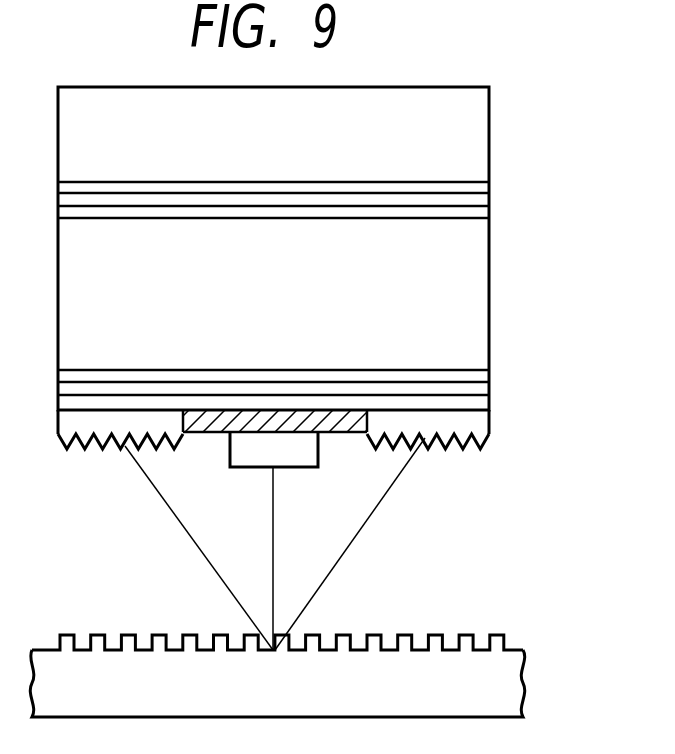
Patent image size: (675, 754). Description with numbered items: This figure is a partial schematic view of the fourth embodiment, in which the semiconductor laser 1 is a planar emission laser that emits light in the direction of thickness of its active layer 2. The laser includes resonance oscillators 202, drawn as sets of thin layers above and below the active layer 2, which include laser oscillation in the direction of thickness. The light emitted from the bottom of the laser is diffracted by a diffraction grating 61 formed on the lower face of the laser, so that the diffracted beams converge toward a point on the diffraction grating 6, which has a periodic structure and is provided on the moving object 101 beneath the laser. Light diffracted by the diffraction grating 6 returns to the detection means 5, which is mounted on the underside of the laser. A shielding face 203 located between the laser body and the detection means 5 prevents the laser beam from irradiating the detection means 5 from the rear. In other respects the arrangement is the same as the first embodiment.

The semiconductor laser 1 is at (480, 120).
The active layer 2 is at (478, 302).
The resonance oscillators 202 is at (497, 175).
The shielding face 203 is at (352, 433).
The diffraction grating 61 is at (475, 427).
The detection means 5 is at (245, 460).
The diffraction grating 6 is at (500, 643).
The moving object 101 is at (513, 687).